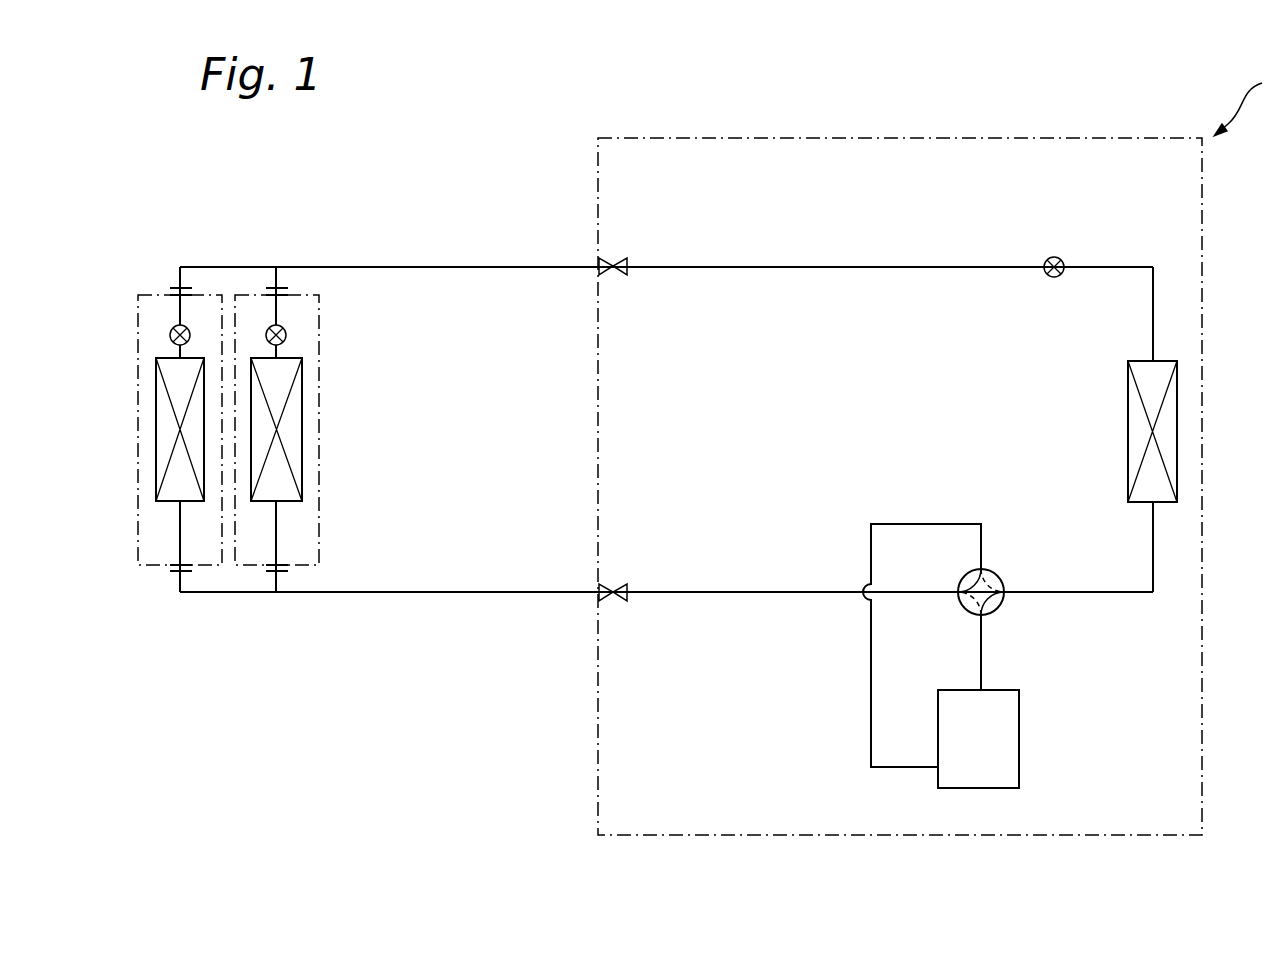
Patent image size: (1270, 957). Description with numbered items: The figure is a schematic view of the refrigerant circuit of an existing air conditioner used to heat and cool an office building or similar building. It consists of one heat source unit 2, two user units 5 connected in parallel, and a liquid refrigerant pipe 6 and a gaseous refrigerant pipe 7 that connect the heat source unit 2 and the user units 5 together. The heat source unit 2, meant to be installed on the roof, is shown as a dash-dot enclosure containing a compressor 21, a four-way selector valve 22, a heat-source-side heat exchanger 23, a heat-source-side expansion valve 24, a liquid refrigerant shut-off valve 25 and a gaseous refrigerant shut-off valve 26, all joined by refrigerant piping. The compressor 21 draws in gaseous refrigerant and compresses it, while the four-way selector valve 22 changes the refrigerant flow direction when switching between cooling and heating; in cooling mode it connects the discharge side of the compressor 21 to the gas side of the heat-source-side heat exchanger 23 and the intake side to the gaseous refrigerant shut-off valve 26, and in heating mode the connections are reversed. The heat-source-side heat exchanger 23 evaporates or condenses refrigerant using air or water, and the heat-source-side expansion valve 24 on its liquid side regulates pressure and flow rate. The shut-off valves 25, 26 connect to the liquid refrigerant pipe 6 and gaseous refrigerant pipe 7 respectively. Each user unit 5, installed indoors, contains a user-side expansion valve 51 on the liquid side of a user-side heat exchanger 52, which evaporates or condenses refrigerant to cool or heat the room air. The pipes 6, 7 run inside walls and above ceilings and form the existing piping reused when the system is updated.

The heat source unit 2 is at (930, 138).
The user units 5 is at (268, 511).
The user-side expansion valve 51 is at (287, 333).
The user-side heat exchanger 52 is at (277, 429).
The liquid refrigerant pipe 6 is at (478, 266).
The gaseous refrigerant pipe 7 is at (448, 592).
The compressor 21 is at (938, 730).
The four-way selector valve 22 is at (1000, 572).
The heat-source-side heat exchanger 23 is at (1128, 428).
The heat-source-side expansion valve 24 is at (1054, 278).
The liquid refrigerant shut-off valve 25 is at (617, 275).
The gaseous refrigerant shut-off valve 26 is at (617, 585).